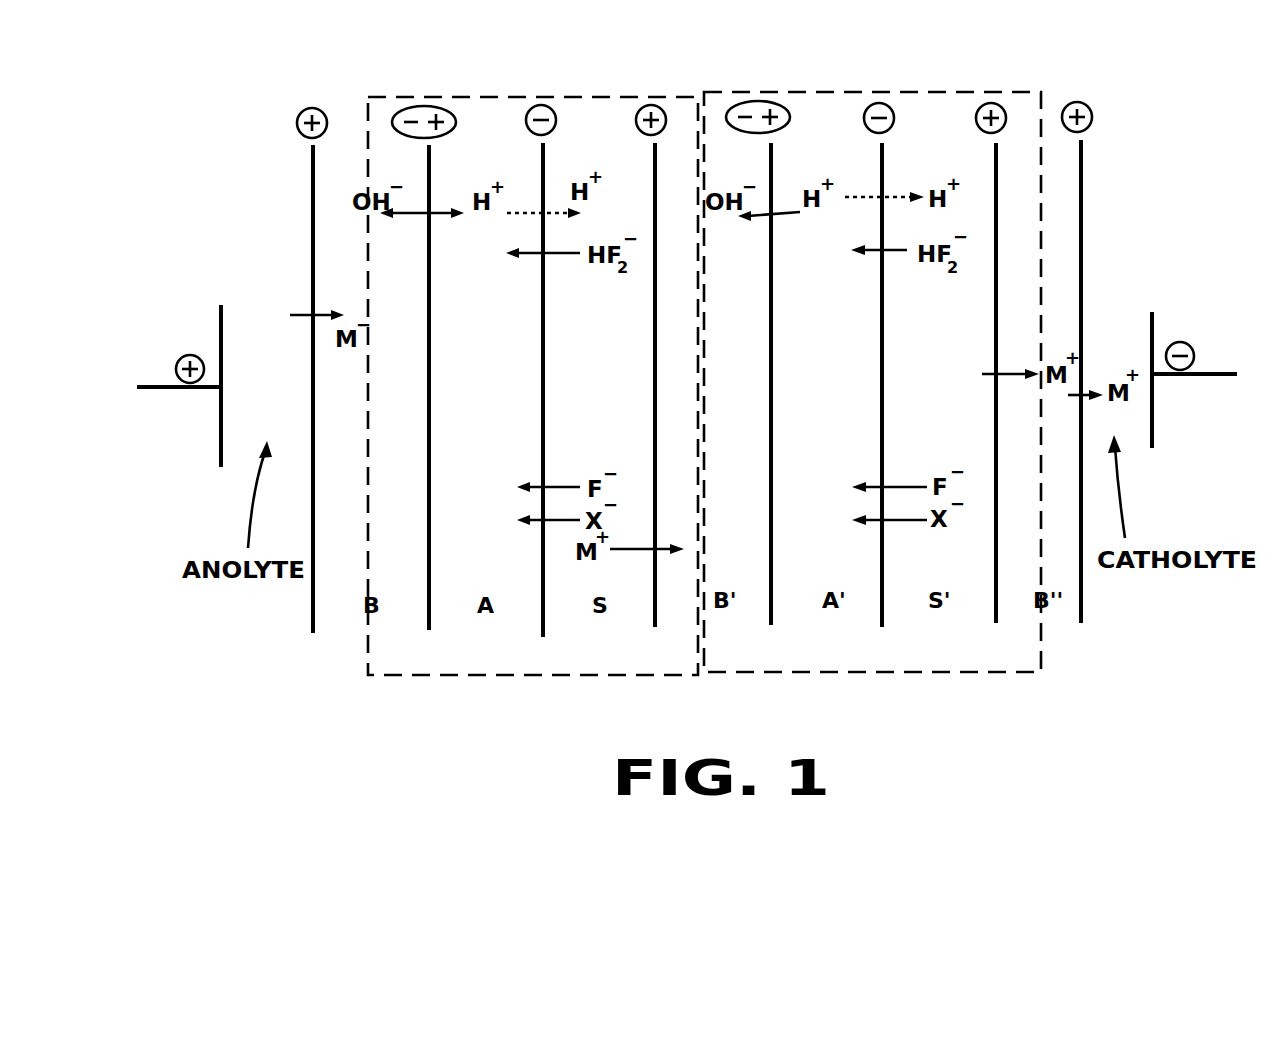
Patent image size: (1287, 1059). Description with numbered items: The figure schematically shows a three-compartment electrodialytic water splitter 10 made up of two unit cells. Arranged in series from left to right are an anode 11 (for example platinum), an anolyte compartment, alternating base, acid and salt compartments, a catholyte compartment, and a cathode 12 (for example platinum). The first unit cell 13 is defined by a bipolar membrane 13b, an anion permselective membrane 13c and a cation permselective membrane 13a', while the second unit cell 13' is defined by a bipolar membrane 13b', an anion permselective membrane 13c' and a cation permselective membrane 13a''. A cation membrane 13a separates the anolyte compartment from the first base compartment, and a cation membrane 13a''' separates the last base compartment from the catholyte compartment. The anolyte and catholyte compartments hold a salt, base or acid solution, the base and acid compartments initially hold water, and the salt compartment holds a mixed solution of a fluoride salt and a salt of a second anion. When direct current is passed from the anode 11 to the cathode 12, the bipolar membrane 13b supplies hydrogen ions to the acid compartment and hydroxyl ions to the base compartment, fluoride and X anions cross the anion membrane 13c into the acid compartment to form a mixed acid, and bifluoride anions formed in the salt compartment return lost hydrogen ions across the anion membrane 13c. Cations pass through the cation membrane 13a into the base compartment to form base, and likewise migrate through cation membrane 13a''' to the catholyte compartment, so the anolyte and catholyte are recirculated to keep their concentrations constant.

The water splitter 10 is at (1108, 89).
The anode 11 is at (221, 330).
The cathode 12 is at (1153, 322).
The unit cell 13 is at (500, 370).
The unit cell 13' is at (872, 348).
The cation membrane 13a is at (297, 390).
The bipolar membrane 13b is at (420, 389).
The anion permselective membrane 13c is at (528, 389).
The cation permselective membrane 13a' is at (633, 389).
The bipolar membrane 13b' is at (757, 384).
The anion permselective membrane 13c' is at (859, 385).
The cation permselective membrane 13a'' is at (973, 385).
The cation membrane 13a''' is at (1092, 404).